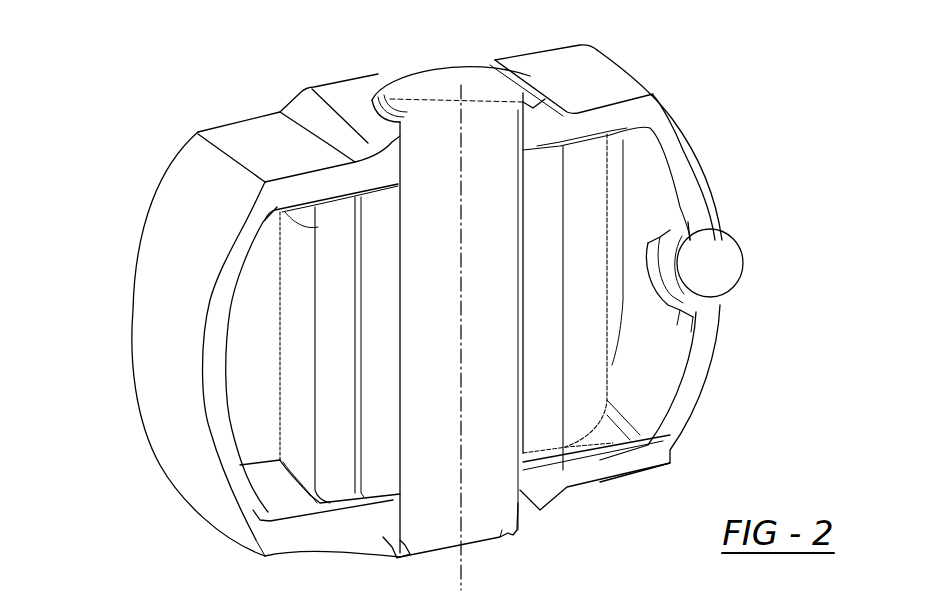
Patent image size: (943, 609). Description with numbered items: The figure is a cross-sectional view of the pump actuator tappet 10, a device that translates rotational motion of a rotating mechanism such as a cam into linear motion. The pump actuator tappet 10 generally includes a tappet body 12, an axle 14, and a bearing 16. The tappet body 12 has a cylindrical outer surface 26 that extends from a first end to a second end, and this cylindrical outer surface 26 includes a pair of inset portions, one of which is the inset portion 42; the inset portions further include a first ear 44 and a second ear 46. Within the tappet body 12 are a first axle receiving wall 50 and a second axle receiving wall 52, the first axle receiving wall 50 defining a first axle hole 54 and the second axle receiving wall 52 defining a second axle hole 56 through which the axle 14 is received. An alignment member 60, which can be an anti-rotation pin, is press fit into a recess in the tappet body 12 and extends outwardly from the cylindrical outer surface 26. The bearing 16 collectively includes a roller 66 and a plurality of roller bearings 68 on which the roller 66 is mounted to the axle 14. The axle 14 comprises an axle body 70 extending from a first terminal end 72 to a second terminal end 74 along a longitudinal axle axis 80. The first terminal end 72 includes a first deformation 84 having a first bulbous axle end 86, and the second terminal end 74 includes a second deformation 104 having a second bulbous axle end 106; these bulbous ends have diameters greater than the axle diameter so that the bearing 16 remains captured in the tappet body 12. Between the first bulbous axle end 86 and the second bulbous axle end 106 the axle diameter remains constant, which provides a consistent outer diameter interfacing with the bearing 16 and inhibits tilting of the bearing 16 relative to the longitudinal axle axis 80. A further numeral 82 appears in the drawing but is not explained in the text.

The pump actuator tappet 10 is at (676, 64).
The tappet body 12 is at (153, 285).
The axle 14 is at (493, 222).
The bearing 16 is at (585, 342).
The cylindrical outer surface 26 is at (168, 395).
The inset portion 42 is at (284, 4).
The first ear 44 is at (356, 95).
The second ear 46 is at (540, 505).
The first axle receiving wall 50 is at (400, 153).
The second axle receiving wall 52 is at (400, 510).
The first axle hole 54 is at (520, 137).
The second axle hole 56 is at (517, 487).
The alignment member 60 is at (725, 262).
The roller 66 is at (592, 398).
The roller bearings 68 is at (540, 417).
The axle body 70 is at (500, 283).
The first terminal end 72 is at (487, 80).
The second terminal end 74 is at (498, 536).
The longitudinal axle axis 80 is at (460, 333).
The component 82 is at (357, 4).
The first deformation 84 is at (397, 87).
The first bulbous axle end 86 is at (387, 118).
The second deformation 104 is at (398, 557).
The second bulbous axle end 106 is at (392, 545).